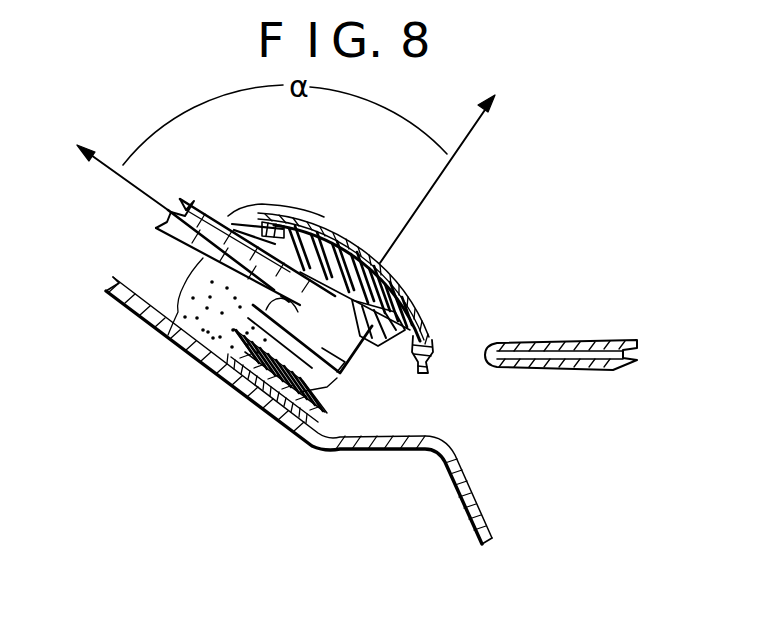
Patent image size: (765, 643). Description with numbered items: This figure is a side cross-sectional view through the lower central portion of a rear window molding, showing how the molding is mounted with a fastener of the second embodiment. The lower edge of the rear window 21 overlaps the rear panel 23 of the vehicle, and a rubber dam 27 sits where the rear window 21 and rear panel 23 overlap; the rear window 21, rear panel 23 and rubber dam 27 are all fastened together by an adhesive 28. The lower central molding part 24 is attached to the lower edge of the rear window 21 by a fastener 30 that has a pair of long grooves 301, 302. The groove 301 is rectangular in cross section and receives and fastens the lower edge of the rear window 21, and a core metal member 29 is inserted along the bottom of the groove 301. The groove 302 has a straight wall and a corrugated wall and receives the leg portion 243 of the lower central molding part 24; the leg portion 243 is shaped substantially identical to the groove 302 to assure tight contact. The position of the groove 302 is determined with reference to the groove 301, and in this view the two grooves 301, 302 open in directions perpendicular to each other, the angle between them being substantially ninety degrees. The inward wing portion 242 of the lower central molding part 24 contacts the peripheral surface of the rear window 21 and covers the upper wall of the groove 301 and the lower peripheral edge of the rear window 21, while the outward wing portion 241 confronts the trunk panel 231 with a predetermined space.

The rear window 21 is at (190, 212).
The rear panel 23 is at (143, 306).
The lower central molding part 24 is at (381, 266).
The rubber dam 27 is at (283, 381).
The adhesive 28 is at (207, 312).
The core metal member 29 is at (257, 383).
The fastener 30 is at (327, 387).
The trunk panel 231 is at (578, 343).
The outward wing portion 241 is at (433, 360).
The inward wing portion 242 is at (252, 218).
The leg portion 243 is at (367, 342).
The groove 301 is at (232, 370).
The groove 302 is at (333, 362).